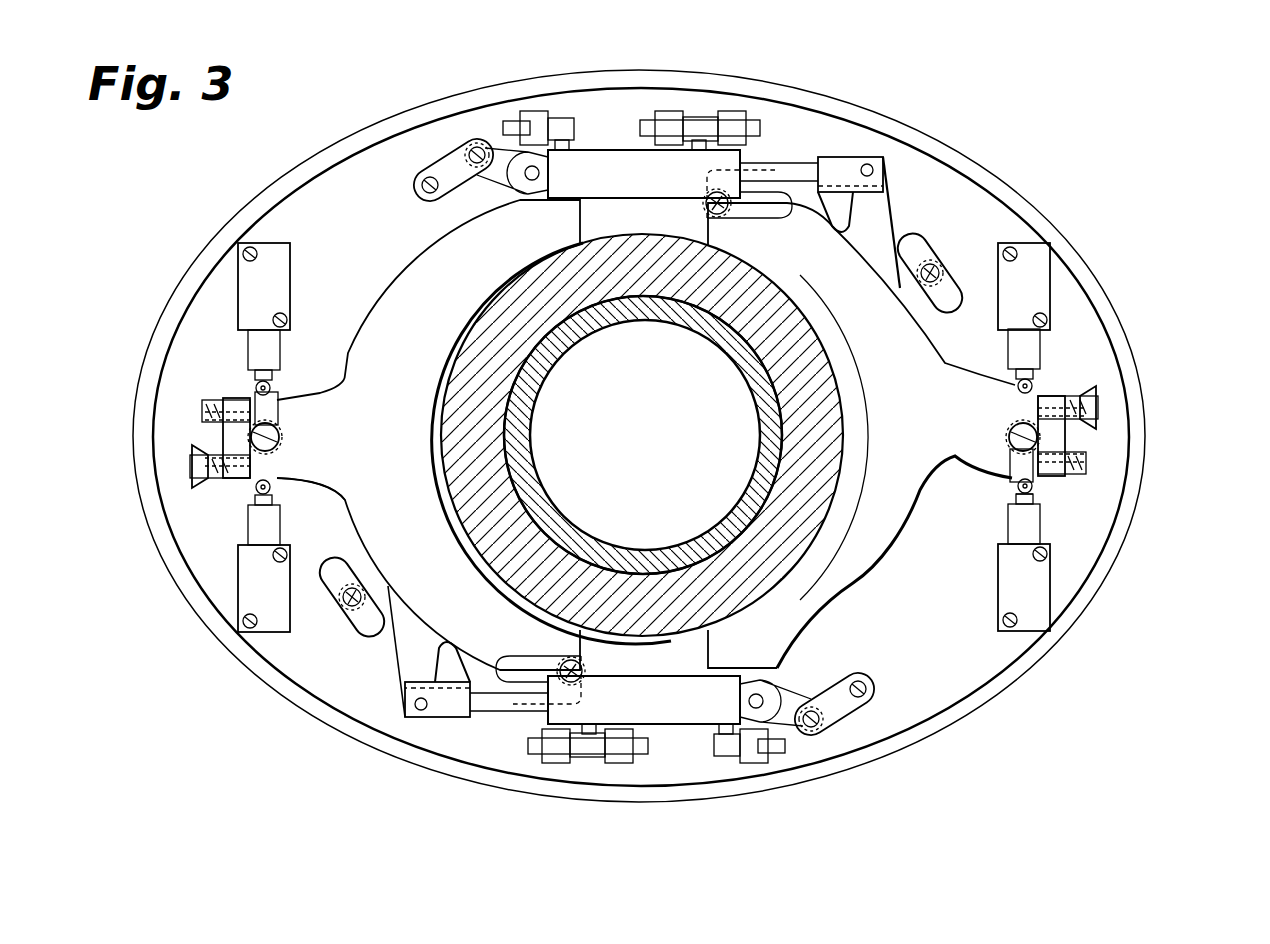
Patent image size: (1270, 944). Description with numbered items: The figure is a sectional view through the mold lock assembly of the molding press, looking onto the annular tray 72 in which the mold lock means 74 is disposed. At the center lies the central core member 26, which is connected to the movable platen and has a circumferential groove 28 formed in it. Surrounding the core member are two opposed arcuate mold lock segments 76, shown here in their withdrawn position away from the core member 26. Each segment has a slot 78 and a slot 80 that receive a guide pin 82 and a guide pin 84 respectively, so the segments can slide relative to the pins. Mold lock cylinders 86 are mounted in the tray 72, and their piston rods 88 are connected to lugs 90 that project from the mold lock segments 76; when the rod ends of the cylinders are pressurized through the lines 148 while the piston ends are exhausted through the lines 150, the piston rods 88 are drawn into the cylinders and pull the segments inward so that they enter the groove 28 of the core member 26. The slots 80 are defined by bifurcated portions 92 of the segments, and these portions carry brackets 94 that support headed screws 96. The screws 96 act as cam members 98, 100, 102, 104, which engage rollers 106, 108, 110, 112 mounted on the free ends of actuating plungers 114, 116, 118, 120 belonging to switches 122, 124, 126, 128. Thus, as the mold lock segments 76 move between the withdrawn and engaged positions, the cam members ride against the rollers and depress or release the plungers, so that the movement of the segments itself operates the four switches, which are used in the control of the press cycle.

The central core member 26 is at (524, 442).
The circumferential groove 28 is at (640, 250).
The annular tray 72 is at (975, 165).
The mold lock means 74 is at (905, 97).
The arcuate mold lock segments 76 is at (399, 353).
The slot 78 is at (768, 190).
The slot 80 is at (212, 424).
The guide pin 82 is at (705, 205).
The guide pin 84 is at (281, 442).
The mold lock cylinders 86 is at (608, 165).
The piston rods 88 is at (812, 170).
The lugs 90 is at (880, 212).
The bifurcated portions 92 is at (205, 400).
The brackets 94 is at (233, 398).
The headed screws 96 is at (198, 406).
The cam member 98 is at (282, 403).
The cam member 100 is at (190, 470).
The cam member 102 is at (1097, 398).
The cam member 104 is at (1010, 465).
The roller 106 is at (270, 388).
The roller 108 is at (292, 478).
The roller 110 is at (1018, 388).
The roller 112 is at (1032, 488).
The actuating plunger 114 is at (282, 358).
The actuating plunger 116 is at (270, 490).
The actuating plunger 118 is at (1015, 378).
The actuating plunger 120 is at (1012, 500).
The switch 122 is at (290, 268).
The switch 124 is at (290, 620).
The switch 126 is at (1050, 248).
The switch 128 is at (1000, 583).
The lines 148 is at (690, 125).
The lines 150 is at (540, 130).